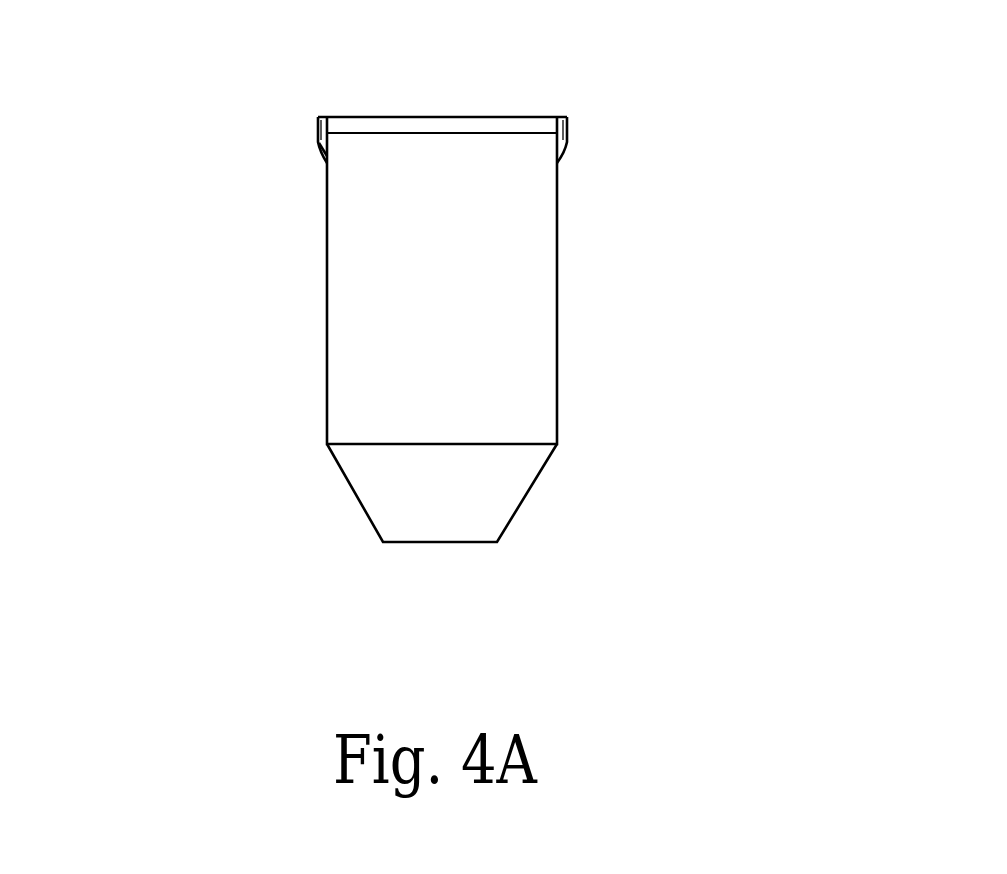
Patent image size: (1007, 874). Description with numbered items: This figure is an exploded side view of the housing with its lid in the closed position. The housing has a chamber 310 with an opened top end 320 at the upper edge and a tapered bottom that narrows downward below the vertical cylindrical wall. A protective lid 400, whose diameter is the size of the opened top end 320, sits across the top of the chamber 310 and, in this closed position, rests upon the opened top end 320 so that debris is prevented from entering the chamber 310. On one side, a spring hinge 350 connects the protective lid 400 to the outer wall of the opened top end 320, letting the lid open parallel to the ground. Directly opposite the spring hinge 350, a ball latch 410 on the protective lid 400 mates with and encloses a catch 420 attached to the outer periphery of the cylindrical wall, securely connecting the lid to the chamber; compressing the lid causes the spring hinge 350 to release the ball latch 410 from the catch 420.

The chamber 310 is at (533, 322).
The opened top end 320 is at (372, 142).
The spring hinge 350 is at (563, 129).
The protective lid 400 is at (447, 117).
The ball latch 410 is at (317, 119).
The catch 420 is at (317, 140).